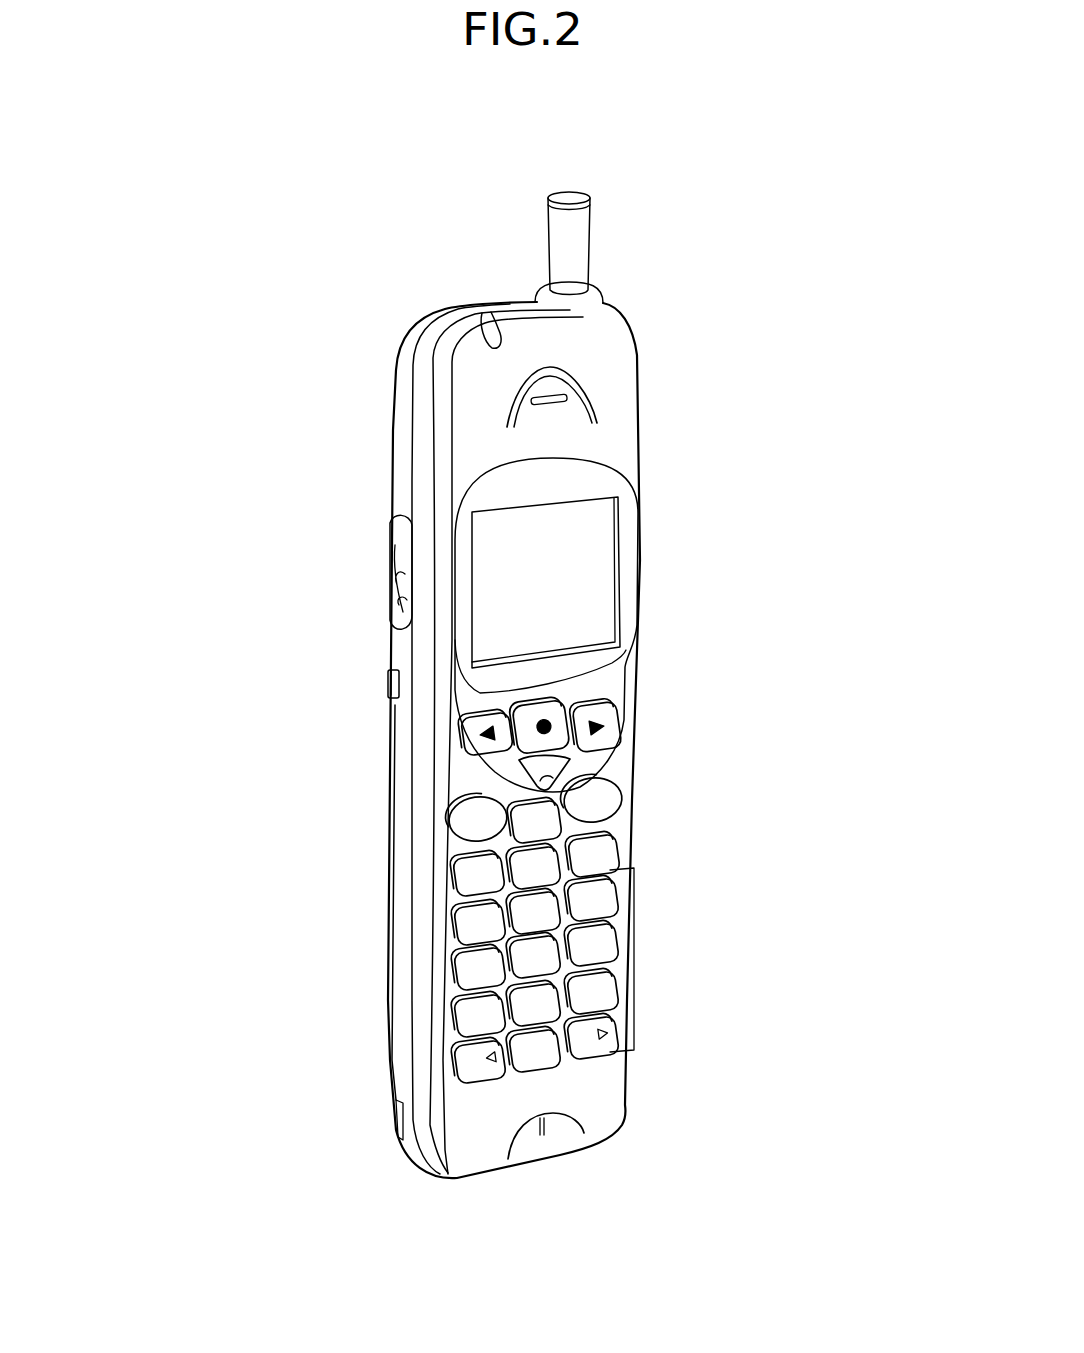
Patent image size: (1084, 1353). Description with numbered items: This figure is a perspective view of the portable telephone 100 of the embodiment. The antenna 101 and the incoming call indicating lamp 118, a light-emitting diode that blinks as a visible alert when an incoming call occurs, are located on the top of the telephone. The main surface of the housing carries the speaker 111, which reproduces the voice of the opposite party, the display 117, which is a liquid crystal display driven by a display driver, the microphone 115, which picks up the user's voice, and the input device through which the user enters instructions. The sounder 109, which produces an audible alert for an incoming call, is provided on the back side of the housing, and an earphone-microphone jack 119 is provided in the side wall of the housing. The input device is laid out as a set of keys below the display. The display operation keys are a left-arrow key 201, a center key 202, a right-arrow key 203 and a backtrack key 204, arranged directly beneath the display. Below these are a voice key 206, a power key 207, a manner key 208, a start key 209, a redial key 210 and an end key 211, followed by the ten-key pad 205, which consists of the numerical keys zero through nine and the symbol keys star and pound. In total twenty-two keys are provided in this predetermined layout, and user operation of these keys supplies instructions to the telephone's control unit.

The portable telephone 100 is at (639, 337).
The antenna 101 is at (577, 242).
The sounder 109 is at (379, 674).
The speaker 111 is at (568, 400).
The microphone 115 is at (556, 1134).
The display device 117 is at (603, 548).
The incoming call indicating lamp 118 is at (412, 331).
The earphone-microphone jack 119 is at (390, 598).
The left-arrow key 201 is at (478, 739).
The center key 202 is at (565, 712).
The right-arrow key 203 is at (600, 718).
The backtrack key 204 is at (523, 771).
The ten-key pad 205 is at (636, 972).
The voice key 206 is at (471, 823).
The power key 207 is at (545, 823).
The manner key 208 is at (603, 789).
The start key 209 is at (470, 880).
The redial key 210 is at (534, 868).
The end key 211 is at (603, 843).